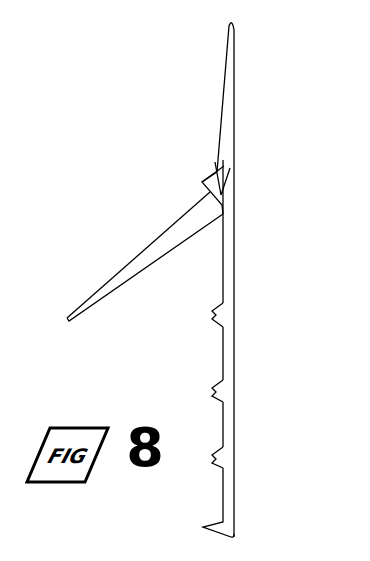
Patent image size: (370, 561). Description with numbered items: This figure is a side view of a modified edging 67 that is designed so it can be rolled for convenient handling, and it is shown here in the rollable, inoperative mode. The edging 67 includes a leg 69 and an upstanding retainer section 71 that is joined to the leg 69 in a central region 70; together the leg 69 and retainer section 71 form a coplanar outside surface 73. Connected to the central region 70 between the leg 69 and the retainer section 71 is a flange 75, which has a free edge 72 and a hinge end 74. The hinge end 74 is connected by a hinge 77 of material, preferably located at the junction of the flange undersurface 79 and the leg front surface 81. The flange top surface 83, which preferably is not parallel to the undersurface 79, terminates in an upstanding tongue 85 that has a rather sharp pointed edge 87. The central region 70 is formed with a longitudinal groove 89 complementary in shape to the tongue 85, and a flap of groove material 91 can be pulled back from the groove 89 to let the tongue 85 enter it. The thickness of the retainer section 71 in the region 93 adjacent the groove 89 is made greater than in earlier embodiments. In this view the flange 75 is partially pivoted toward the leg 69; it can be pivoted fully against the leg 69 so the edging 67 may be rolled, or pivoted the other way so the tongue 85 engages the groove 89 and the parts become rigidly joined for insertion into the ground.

The modified edging 67 is at (279, 128).
The leg 69 is at (238, 423).
The central region 70 is at (237, 191).
The upstanding retainer section 71 is at (238, 70).
The free edge 72 is at (68, 321).
The coplanar outside surface 73 is at (234, 309).
The hinge end 74 is at (216, 211).
The flange 75 is at (94, 291).
The hinge 77 is at (236, 214).
The flange undersurface 79 is at (124, 284).
The leg front surface 81 is at (223, 366).
The flange top surface 83 is at (130, 262).
The upstanding tongue 85 is at (201, 186).
The pointed edge 87 is at (200, 180).
The longitudinal groove 89 is at (226, 187).
The flap of groove material 91 is at (220, 165).
The region adjacent the groove 93 is at (219, 130).